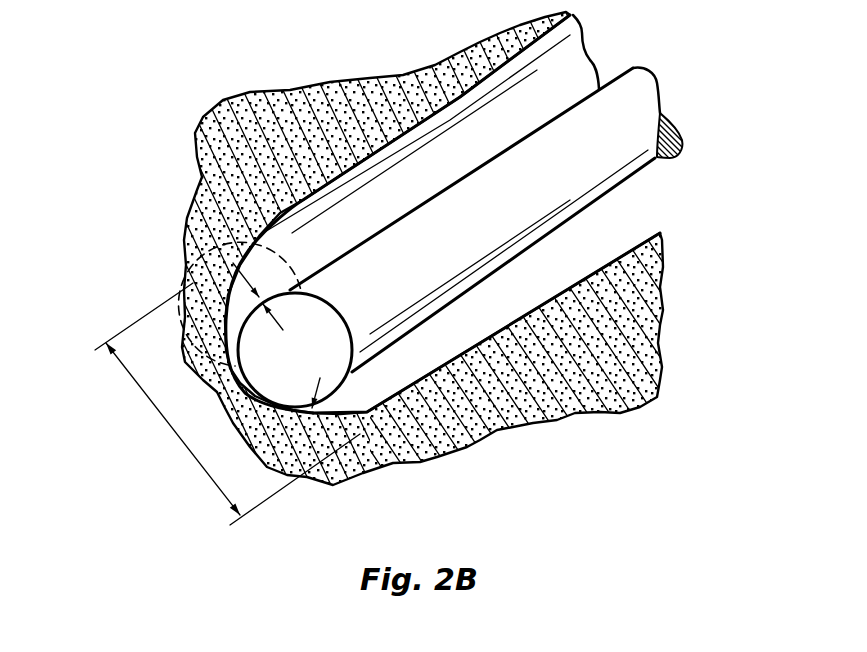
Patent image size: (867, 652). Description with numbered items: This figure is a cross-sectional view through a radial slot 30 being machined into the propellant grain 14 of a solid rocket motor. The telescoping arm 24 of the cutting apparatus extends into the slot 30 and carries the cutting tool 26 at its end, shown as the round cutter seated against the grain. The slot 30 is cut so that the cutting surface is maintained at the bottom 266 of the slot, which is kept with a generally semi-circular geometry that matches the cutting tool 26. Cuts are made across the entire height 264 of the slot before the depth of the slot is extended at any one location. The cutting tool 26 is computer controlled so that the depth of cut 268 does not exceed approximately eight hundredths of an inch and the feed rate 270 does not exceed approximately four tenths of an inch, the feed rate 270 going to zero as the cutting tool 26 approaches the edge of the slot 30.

The propellant grain 14 is at (628, 347).
The telescoping arm 24 is at (617, 156).
The cutting tool 26 is at (320, 330).
The radial slot 30 is at (568, 80).
The height of the slot 264 is at (227, 404).
The bottom of the slot 266 is at (185, 362).
The depth of cut 268 is at (314, 422).
The feed rate 270 is at (263, 293).